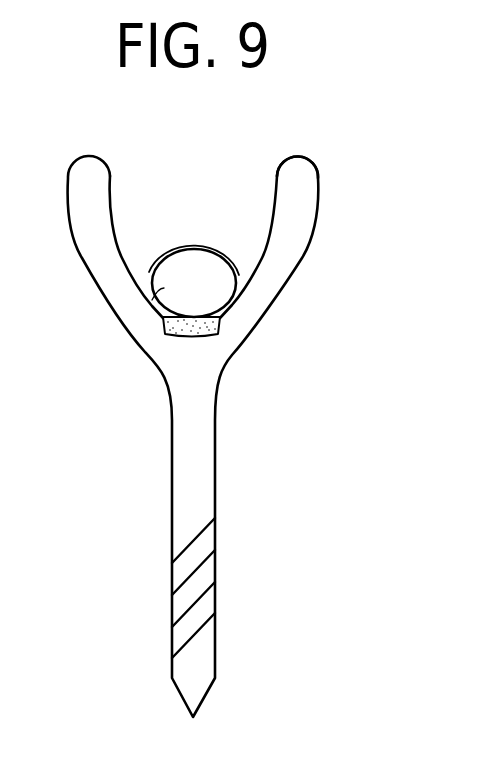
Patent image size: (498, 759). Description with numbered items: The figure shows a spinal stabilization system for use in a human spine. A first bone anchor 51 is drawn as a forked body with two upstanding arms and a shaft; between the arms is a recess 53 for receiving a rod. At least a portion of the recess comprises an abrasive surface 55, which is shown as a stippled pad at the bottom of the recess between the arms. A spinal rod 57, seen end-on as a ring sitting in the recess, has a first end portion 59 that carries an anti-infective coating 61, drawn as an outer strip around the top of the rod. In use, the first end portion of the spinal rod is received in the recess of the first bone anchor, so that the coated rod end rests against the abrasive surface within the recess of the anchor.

The first bone anchor 51 is at (264, 309).
The recess 53 is at (274, 213).
The abrasive surface 55 is at (183, 336).
The spinal rod 57 is at (168, 262).
The first end portion 59 is at (163, 292).
The anti-infective coating 61 is at (187, 243).